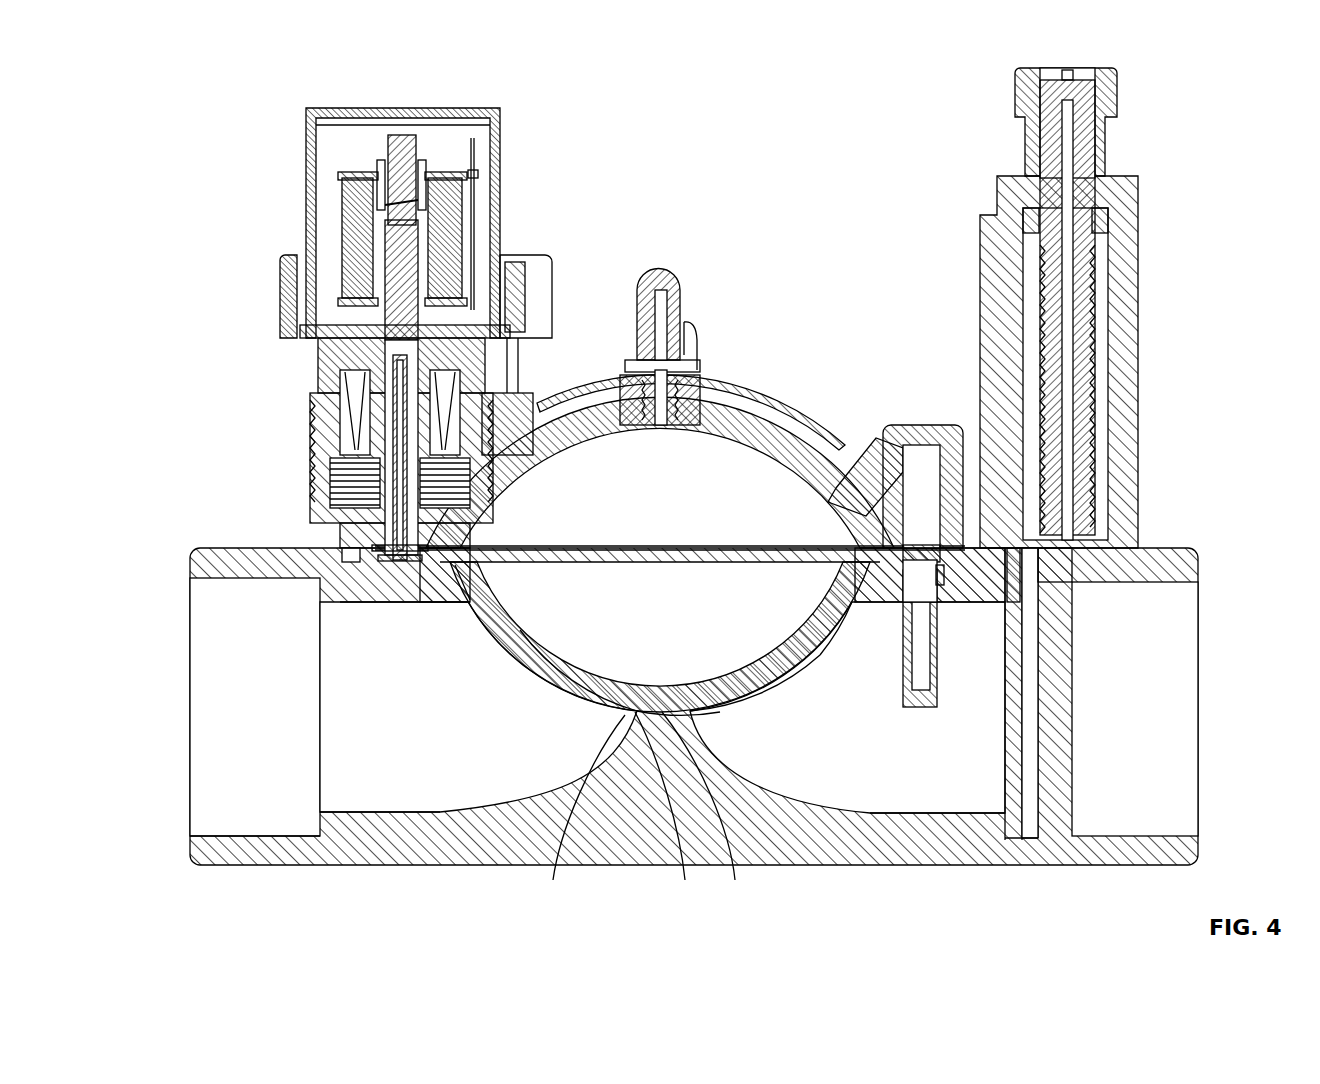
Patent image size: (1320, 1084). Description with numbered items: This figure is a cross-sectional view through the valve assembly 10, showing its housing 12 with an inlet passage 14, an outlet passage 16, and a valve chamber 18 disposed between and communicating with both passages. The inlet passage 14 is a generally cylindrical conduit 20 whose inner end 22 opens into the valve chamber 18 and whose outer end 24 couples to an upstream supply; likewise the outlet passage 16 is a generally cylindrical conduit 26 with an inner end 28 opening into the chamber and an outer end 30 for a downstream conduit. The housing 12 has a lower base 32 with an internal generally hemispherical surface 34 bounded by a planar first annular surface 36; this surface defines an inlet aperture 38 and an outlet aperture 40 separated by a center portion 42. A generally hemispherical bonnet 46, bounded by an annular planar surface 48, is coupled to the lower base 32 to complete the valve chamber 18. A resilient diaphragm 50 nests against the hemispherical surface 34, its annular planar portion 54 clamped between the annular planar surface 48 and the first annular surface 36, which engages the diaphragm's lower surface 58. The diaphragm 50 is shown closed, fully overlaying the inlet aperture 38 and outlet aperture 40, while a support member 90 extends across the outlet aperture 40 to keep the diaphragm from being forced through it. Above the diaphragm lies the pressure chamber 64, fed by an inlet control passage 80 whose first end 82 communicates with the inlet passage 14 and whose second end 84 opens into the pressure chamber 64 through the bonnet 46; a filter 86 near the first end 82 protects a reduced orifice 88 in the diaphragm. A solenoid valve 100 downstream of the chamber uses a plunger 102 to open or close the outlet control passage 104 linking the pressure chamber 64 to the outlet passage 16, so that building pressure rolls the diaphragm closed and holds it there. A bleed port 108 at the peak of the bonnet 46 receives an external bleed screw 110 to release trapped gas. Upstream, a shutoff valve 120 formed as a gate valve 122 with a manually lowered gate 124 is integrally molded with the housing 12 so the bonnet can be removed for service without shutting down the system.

The valve assembly 10 is at (310, 100).
The housing 12 is at (693, 724).
The inlet passage 14 is at (995, 745).
The outlet passage 16 is at (262, 823).
The valve chamber 18 is at (525, 672).
The generally cylindrical conduit 20 is at (985, 815).
The inner end 22 is at (706, 810).
The outer end 24 is at (1200, 830).
The generally cylindrical conduit 26 is at (455, 815).
The inner end 28 is at (580, 812).
The outer end 30 is at (192, 815).
The lower base 32 is at (440, 600).
The generally hemispherical surface 34 is at (470, 580).
The first annular surface 36 is at (900, 545).
The inlet aperture 38 is at (812, 655).
The outlet aperture 40 is at (482, 660).
The center portion 42 is at (667, 810).
The bonnet 46 is at (758, 402).
The annular planar surface 48 is at (886, 588).
The resilient diaphragm 50 is at (755, 675).
The annular planar portion 54 is at (1025, 592).
The lower surface 58 is at (724, 700).
The pressure chamber 64 is at (660, 472).
The inlet control passage 80 is at (921, 432).
The first end 82 is at (938, 580).
The second end 84 is at (860, 472).
The filter 86 is at (940, 682).
The reduced orifice 88 is at (940, 592).
The support member 90 is at (585, 720).
The solenoid valve 100 is at (390, 226).
The plunger 102 is at (325, 480).
The outlet control passage 104 is at (312, 515).
The bleed port 108 is at (700, 385).
The external bleed screw 110 is at (690, 282).
The shutoff valve 120 is at (1117, 98).
The gate valve 122 is at (1105, 365).
The gate 124 is at (1100, 480).